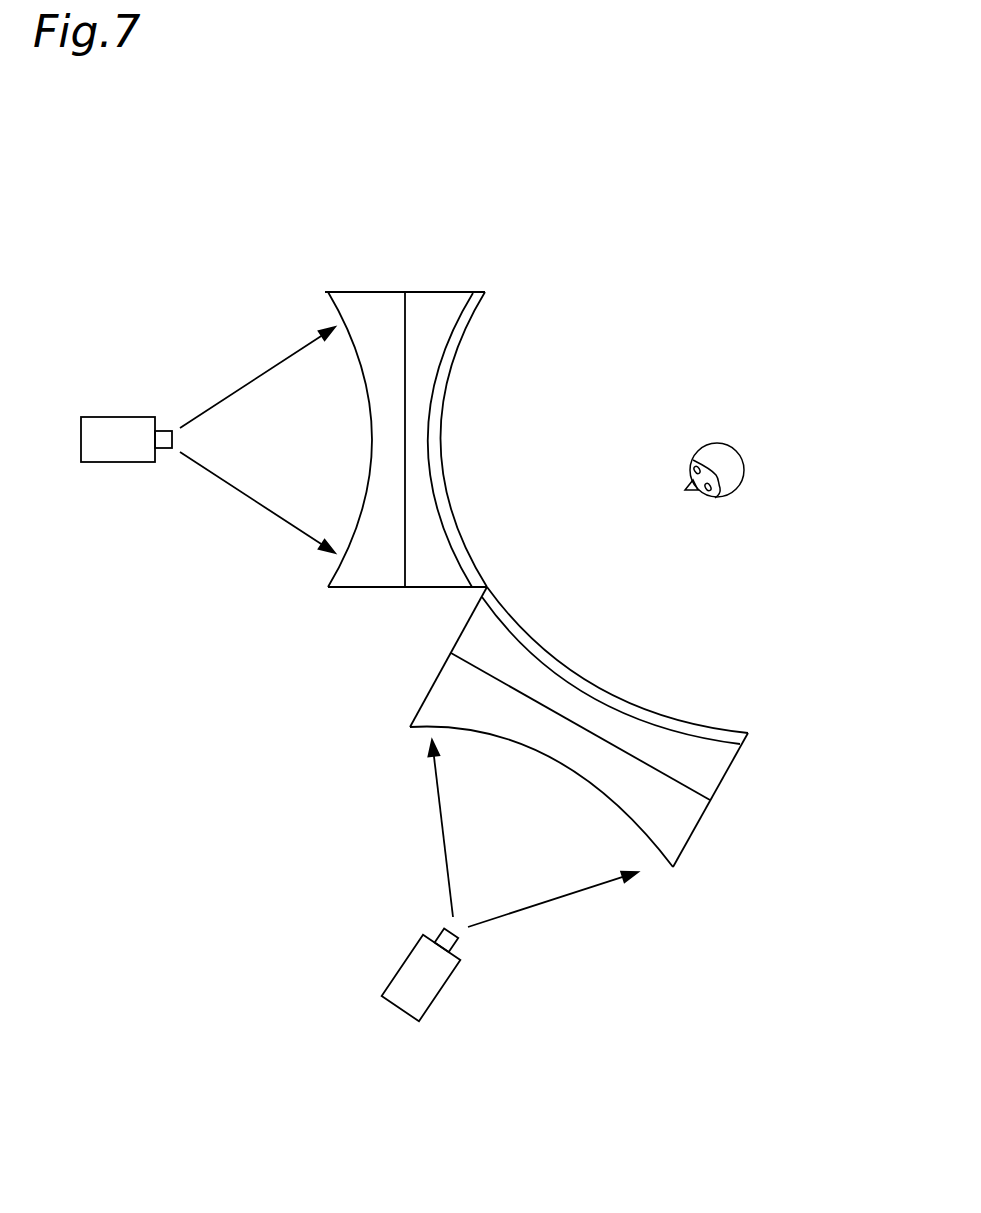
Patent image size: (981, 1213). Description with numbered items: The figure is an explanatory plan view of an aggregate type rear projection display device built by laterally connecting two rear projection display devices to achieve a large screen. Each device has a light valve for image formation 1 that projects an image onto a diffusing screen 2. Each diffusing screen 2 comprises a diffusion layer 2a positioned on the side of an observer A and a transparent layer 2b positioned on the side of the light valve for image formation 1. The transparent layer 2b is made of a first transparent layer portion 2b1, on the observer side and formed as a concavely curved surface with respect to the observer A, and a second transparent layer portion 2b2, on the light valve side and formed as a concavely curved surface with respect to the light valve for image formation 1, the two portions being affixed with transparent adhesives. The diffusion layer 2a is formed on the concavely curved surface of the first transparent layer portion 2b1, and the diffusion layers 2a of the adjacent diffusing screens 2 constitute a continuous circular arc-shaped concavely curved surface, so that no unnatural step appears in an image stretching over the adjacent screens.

The light valve for image formation 1 is at (113, 421).
The diffusing screen 2 is at (588, 518).
The diffusion layer 2a is at (474, 291).
The transparent layer 2b is at (566, 536).
The first transparent layer portion 2b1 is at (428, 303).
The second transparent layer portion 2b2 is at (368, 303).
The observer A is at (720, 450).